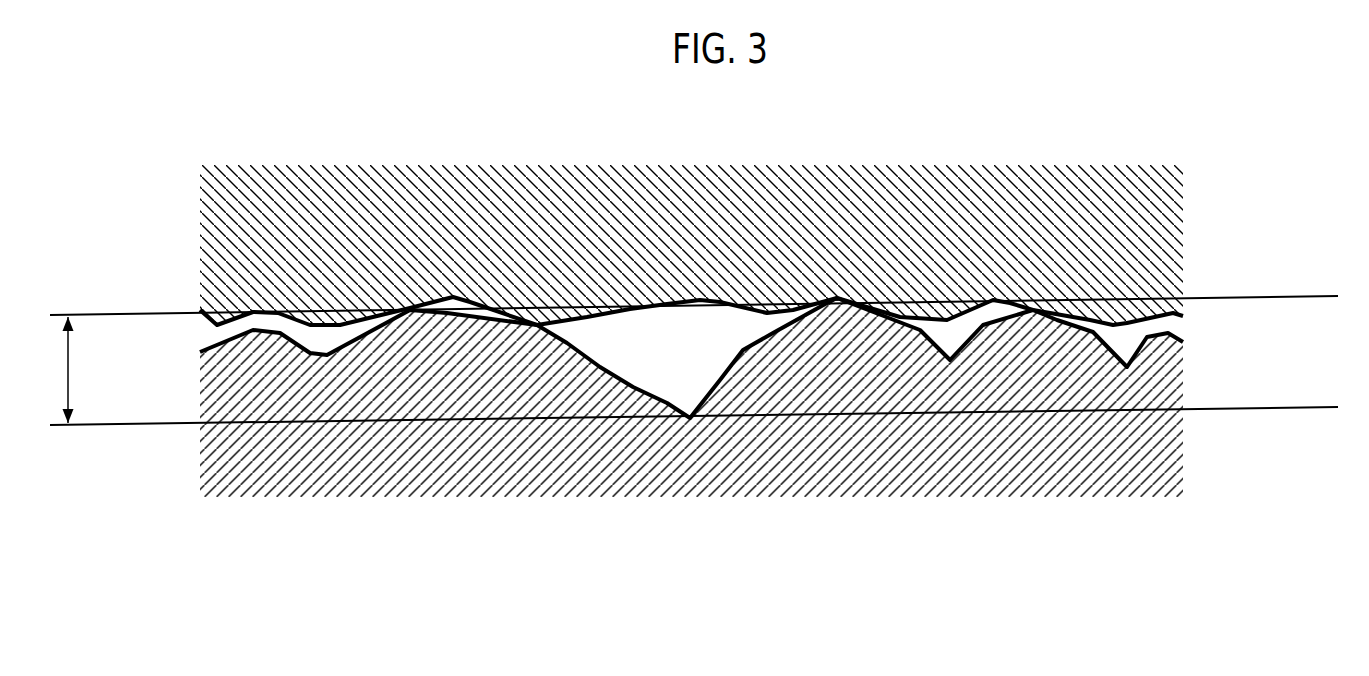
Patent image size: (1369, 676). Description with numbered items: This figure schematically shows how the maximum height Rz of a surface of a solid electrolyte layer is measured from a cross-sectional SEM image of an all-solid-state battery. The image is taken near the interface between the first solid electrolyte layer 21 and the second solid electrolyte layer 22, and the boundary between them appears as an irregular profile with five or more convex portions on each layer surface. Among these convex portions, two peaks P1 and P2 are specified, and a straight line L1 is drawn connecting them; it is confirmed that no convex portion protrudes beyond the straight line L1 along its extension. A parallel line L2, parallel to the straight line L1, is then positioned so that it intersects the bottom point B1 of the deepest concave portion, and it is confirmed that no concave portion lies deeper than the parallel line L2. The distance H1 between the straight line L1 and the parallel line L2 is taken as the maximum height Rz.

The first solid electrolyte layer 21 is at (1182, 195).
The second solid electrolyte layer 22 is at (1182, 485).
The straight line L1 is at (707, 301).
The parallel line L2 is at (707, 412).
The distance H1 is at (54, 370).
The peak P1 is at (410, 308).
The bottom point B1 is at (690, 418).
The peak P2 is at (837, 298).